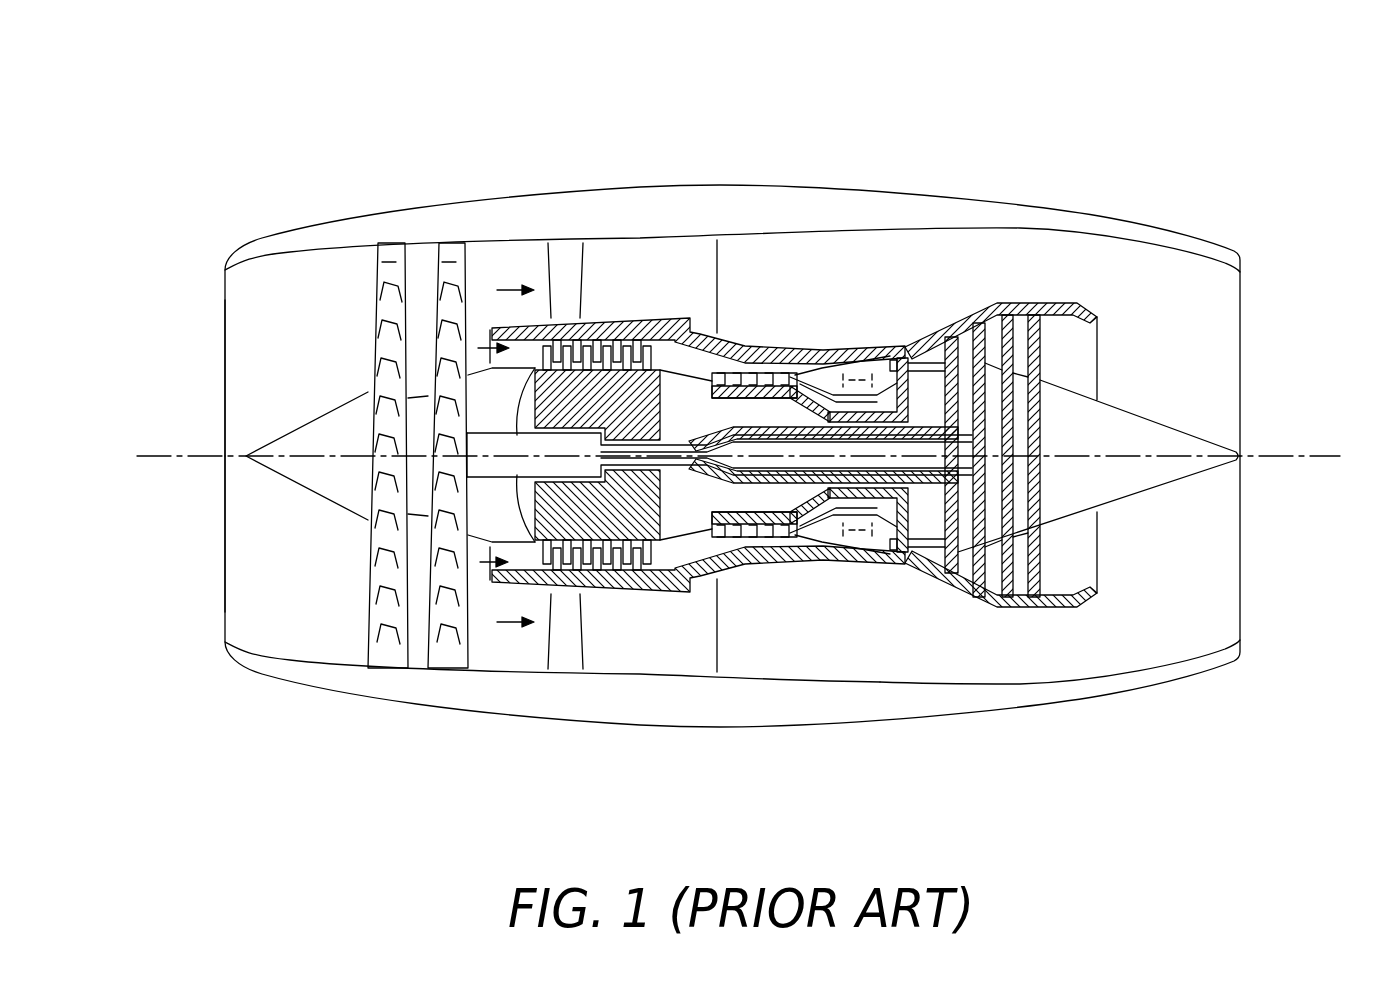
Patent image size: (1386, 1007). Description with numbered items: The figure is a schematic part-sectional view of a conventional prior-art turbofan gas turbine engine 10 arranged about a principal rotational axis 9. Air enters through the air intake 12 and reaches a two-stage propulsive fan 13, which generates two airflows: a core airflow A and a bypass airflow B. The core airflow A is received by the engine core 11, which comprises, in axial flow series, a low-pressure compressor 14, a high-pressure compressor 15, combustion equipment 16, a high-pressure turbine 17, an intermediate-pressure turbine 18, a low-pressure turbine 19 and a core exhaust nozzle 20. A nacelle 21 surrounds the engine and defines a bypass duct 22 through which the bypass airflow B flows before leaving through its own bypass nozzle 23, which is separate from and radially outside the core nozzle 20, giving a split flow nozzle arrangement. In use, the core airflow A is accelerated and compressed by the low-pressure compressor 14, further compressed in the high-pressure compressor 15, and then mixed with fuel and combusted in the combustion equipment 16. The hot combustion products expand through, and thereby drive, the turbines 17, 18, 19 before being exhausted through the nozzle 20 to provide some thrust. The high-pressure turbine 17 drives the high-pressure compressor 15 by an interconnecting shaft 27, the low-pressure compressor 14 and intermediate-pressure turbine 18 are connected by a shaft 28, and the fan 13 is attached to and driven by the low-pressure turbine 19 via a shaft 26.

The principal rotational axis 9 is at (145, 456).
The turbofan gas turbine engine 10 is at (238, 98).
The core 11 is at (650, 318).
The air intake 12 is at (308, 310).
The two-stage propulsive fan 13 is at (452, 243).
The low-pressure compressor 14 is at (594, 336).
The high-pressure compressor 15 is at (748, 368).
The combustion equipment 16 is at (858, 368).
The high-pressure turbine 17 is at (903, 345).
The intermediate-pressure turbine 18 is at (950, 337).
The low-pressure turbine 19 is at (980, 321).
The core exhaust nozzle 20 is at (1097, 552).
The nacelle 21 is at (335, 218).
The bypass duct 22 is at (656, 640).
The bypass nozzle 23 is at (1057, 642).
The shaft 26 is at (568, 340).
The interconnecting shaft 27 is at (812, 395).
The shaft 28 is at (675, 352).
The core airflow A is at (488, 283).
The bypass airflow B is at (484, 348).